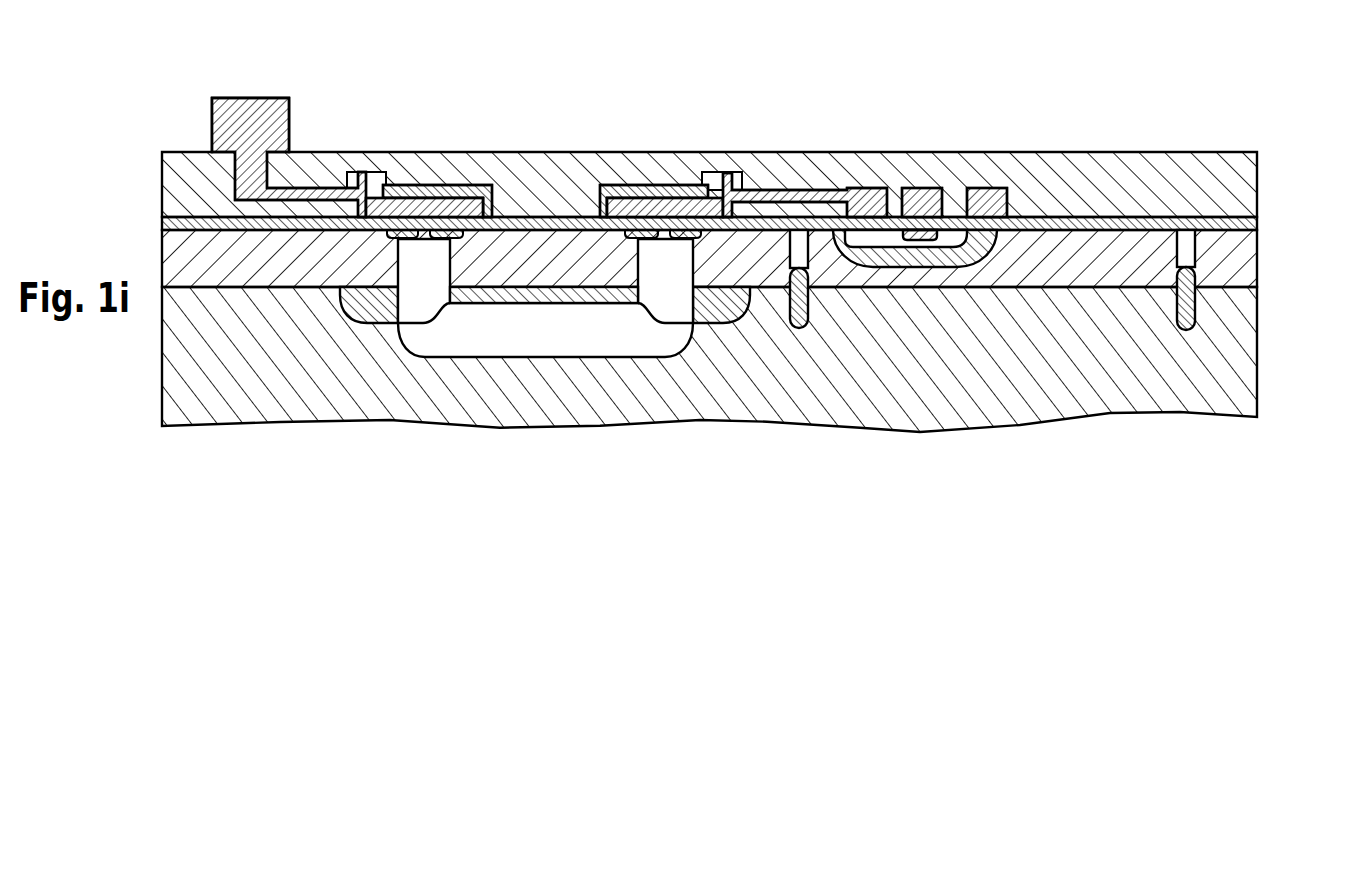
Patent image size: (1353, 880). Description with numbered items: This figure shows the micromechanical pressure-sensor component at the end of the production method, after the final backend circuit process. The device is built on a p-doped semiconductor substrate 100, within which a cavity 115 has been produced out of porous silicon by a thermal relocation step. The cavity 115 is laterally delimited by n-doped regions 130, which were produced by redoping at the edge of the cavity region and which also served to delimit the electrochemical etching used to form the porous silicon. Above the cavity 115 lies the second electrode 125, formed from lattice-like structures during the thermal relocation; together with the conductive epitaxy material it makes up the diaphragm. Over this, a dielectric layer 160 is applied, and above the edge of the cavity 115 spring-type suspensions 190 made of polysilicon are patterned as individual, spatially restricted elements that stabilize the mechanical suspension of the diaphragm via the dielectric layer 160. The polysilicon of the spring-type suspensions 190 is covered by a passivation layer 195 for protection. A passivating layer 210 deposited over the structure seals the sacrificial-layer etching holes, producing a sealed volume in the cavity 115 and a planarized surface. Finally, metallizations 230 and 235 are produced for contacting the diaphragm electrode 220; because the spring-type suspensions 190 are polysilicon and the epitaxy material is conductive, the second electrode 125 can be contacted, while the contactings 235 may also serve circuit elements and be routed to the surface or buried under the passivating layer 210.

The semiconductor substrate 100 is at (1235, 352).
The cavity 115 is at (470, 337).
The second electrode 125 is at (613, 300).
The n-doped regions 130 is at (372, 310).
The dielectric layer 160 is at (1245, 225).
The spring-type suspensions 190 is at (411, 205).
The passivation layer 195 is at (473, 190).
The passivating layer 210 is at (1245, 175).
The diaphragm electrode 220 is at (540, 265).
The metallization 230 is at (243, 125).
The metallizations (contactings) 235 is at (723, 182).